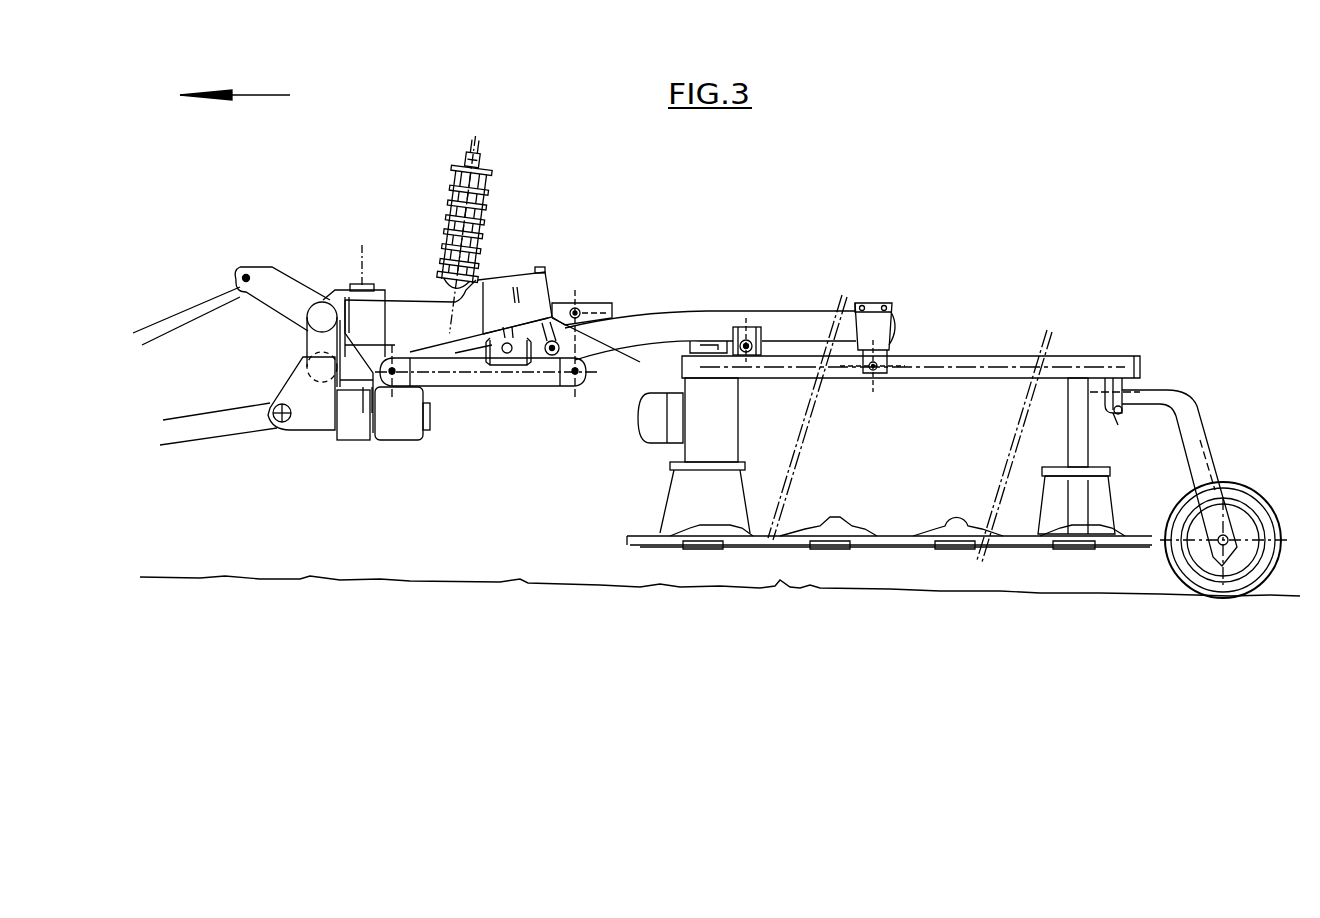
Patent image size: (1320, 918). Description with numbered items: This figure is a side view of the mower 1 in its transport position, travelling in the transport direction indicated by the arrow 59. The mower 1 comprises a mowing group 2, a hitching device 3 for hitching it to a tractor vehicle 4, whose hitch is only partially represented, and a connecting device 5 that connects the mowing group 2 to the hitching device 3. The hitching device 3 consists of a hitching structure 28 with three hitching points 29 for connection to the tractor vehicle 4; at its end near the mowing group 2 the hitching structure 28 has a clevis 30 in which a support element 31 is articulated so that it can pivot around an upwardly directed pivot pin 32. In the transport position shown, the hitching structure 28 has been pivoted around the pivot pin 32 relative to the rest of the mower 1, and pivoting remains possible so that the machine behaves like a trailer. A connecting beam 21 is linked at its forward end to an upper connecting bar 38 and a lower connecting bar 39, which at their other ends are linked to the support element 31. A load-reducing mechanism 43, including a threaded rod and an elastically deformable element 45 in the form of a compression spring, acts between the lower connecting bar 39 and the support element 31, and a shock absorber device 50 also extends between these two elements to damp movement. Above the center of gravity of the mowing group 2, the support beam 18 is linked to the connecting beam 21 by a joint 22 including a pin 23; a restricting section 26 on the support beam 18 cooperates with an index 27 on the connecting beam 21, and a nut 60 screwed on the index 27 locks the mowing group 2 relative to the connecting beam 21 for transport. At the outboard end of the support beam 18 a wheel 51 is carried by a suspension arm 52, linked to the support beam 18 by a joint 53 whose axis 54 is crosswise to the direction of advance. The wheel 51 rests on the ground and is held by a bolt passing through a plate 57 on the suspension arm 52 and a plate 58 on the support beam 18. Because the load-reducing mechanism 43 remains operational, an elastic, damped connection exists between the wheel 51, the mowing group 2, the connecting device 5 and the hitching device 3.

The mower 1 is at (634, 216).
The mowing group 2 is at (891, 568).
The hitching device 3 is at (286, 262).
The tractor vehicle 4 is at (162, 333).
The connecting device 5 is at (607, 290).
The support beam 18 is at (1020, 372).
The connecting beam 21 is at (735, 334).
The joint 22 is at (870, 374).
The pin 23 is at (882, 362).
The restricting section 26 is at (760, 332).
The index 27 is at (735, 337).
The hitching structure 28 is at (310, 343).
The hitching points 29 is at (244, 276).
The clevis 30 is at (336, 290).
The support element 31 is at (436, 310).
The pivot pin 32 is at (364, 284).
The upper connecting bar 38 is at (574, 306).
The lower connecting bar 39 is at (506, 387).
The load-reducing mechanism 43 is at (499, 234).
The elastically deformable element 45 is at (505, 222).
The shock absorber device 50 is at (620, 352).
The wheel 51 is at (1250, 506).
The suspension arm 52 is at (1198, 440).
The joint 53 is at (1110, 384).
The axis 54 is at (1150, 390).
The plate 57 is at (1124, 412).
The plate 58 is at (1116, 416).
The arrow 59 is at (262, 95).
The nut 60 is at (749, 353).